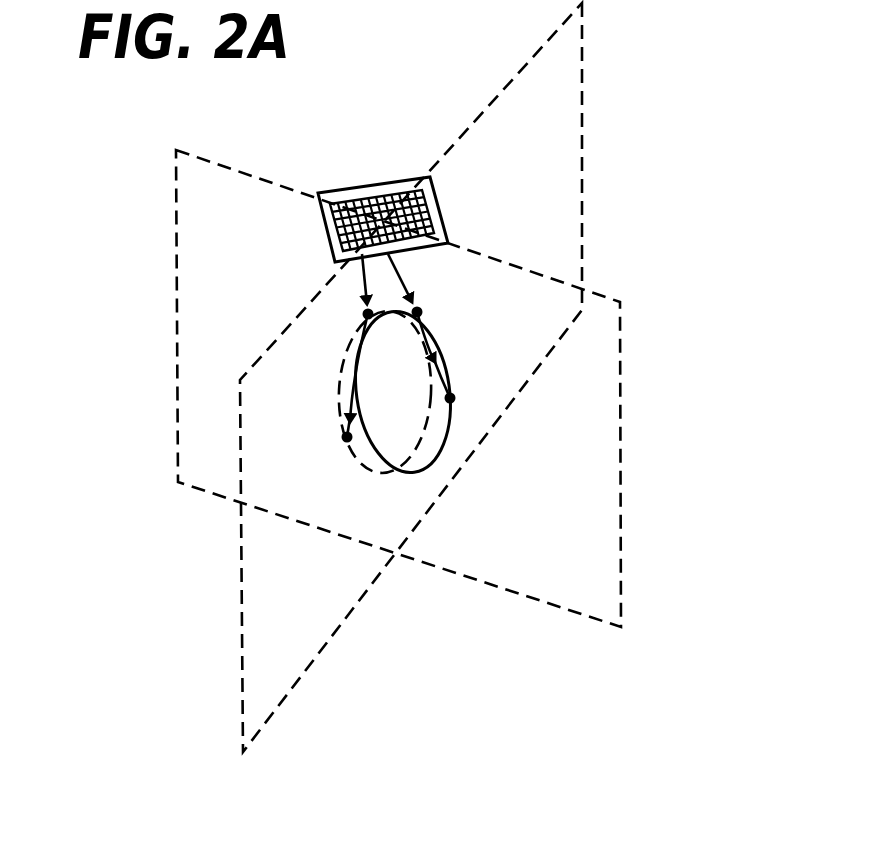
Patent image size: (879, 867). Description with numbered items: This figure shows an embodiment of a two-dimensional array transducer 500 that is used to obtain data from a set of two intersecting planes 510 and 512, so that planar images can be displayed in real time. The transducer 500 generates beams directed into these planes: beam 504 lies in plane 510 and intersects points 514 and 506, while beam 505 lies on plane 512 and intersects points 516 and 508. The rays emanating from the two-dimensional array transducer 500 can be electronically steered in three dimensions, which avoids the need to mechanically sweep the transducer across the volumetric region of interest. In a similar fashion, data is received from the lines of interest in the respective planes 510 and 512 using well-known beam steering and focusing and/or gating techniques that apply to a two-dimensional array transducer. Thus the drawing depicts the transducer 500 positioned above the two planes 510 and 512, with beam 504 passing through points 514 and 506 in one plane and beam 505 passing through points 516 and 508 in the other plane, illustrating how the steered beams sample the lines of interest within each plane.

The transducer 500 is at (353, 189).
The beam 504 is at (413, 273).
The beam 505 is at (367, 253).
The point 506 is at (452, 398).
The point 508 is at (345, 440).
The plane 510 is at (583, 118).
The plane 512 is at (623, 536).
The point 514 is at (420, 312).
The point 516 is at (364, 314).